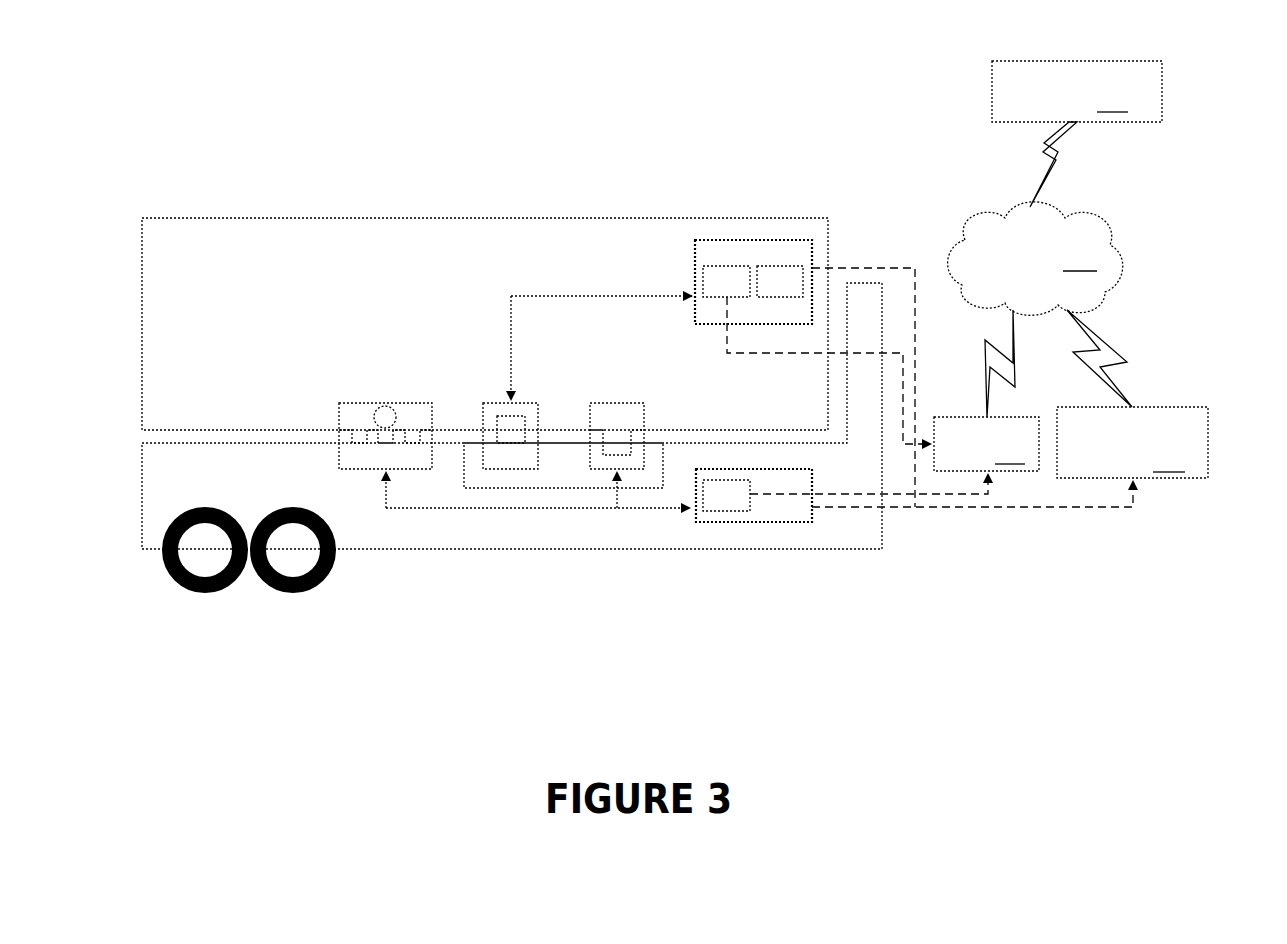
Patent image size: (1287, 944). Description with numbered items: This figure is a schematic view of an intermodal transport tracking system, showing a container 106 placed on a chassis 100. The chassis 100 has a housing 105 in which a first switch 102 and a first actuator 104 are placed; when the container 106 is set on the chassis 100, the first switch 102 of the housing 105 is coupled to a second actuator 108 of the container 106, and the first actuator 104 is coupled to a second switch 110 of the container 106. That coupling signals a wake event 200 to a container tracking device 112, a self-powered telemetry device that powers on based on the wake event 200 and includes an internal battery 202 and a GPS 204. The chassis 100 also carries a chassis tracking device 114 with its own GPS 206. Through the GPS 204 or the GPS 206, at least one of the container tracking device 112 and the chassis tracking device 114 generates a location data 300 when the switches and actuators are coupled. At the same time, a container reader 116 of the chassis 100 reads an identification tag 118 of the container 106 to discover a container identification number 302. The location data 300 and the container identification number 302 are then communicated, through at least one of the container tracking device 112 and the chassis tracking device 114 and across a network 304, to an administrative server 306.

The chassis 100 is at (881, 530).
The first switch 102 is at (645, 469).
The first actuator 104 is at (512, 469).
The housing 105 is at (555, 488).
The container 106 is at (208, 218).
The second actuator 108 is at (690, 392).
The second switch 110 is at (487, 402).
The container tracking device 112 is at (750, 240).
The chassis tracking device 114 is at (812, 515).
The container reader 116 is at (360, 469).
The identification tag 118 is at (338, 417).
The wake event 200 is at (500, 292).
The internal battery 202 is at (775, 266).
The GPS 204 is at (720, 266).
The GPS 206 is at (723, 511).
The location data 300 is at (986, 444).
The container identification number 302 is at (383, 405).
The network 304 is at (1040, 309).
The administrative server 306 is at (1077, 134).